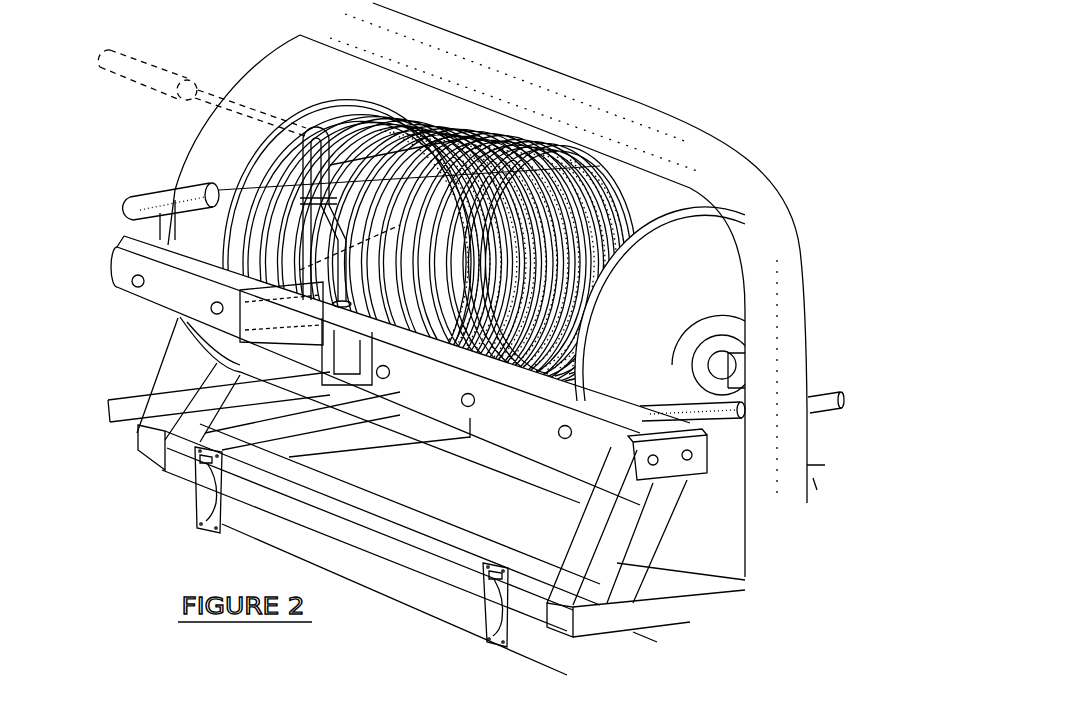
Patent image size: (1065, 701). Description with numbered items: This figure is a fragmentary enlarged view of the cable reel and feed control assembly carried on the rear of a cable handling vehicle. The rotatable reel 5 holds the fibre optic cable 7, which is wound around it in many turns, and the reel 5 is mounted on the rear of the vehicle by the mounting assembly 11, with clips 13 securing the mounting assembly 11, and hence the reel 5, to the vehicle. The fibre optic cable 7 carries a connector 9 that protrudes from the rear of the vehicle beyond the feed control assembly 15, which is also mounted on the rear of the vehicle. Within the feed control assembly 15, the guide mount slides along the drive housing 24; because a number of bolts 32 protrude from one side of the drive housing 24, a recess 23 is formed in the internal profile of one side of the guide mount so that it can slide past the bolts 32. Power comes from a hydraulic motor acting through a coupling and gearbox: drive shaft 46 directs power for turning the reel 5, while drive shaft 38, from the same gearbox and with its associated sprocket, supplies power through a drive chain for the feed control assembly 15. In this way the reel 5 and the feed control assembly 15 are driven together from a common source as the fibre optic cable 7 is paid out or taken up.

The rotatable reel 5 is at (693, 262).
The fibre optic cable 7 is at (580, 183).
The connector 9 is at (145, 188).
The mounting assembly 11 is at (617, 563).
The clips 13 is at (198, 498).
The feed control assembly 15 is at (105, 263).
The recess 23 is at (343, 357).
The drive housing 24 is at (745, 572).
The bolts 32 is at (140, 289).
The drive shaft 38 is at (708, 440).
The drive shaft 46 is at (735, 365).